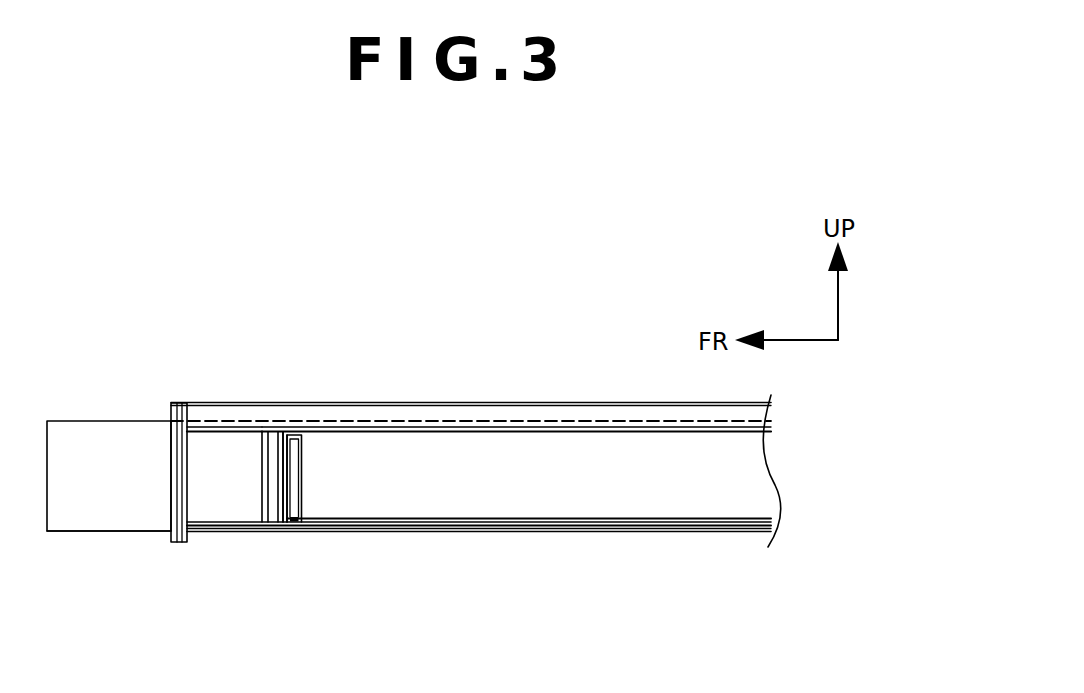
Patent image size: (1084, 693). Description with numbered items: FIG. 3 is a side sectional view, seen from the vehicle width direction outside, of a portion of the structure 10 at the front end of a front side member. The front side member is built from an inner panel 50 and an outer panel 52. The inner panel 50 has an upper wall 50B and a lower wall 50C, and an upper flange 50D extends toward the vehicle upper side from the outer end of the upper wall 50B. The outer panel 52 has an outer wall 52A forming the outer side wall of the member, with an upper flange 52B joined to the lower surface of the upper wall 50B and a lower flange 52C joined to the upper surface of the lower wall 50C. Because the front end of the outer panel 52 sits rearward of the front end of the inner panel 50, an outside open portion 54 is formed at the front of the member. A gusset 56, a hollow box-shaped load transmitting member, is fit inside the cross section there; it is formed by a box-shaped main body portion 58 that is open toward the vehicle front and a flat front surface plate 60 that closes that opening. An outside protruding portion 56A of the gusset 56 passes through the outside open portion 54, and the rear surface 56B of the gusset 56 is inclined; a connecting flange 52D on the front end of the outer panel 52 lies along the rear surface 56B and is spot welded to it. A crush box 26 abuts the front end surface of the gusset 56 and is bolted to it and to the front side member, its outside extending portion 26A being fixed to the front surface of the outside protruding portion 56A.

The vehicle body structure 10 is at (255, 305).
The crush box 26 is at (98, 418).
The outside extending portion 26A is at (105, 500).
The inner panel 50 is at (428, 400).
The upper wall 50B is at (572, 421).
The lower wall 50C is at (555, 532).
The upper flange 50D is at (497, 402).
The outer panel 52 is at (745, 477).
The outer wall 52A is at (432, 497).
The upper flange 52B is at (393, 433).
The lower flange 52C is at (690, 518).
The connecting flange 52D is at (288, 476).
The outside open portion 54 is at (279, 507).
The gusset 56 is at (212, 536).
The outside protruding portion 56A is at (228, 500).
The rear surface 56B is at (275, 442).
The main body portion 58 is at (227, 443).
The front surface plate 60 is at (187, 440).